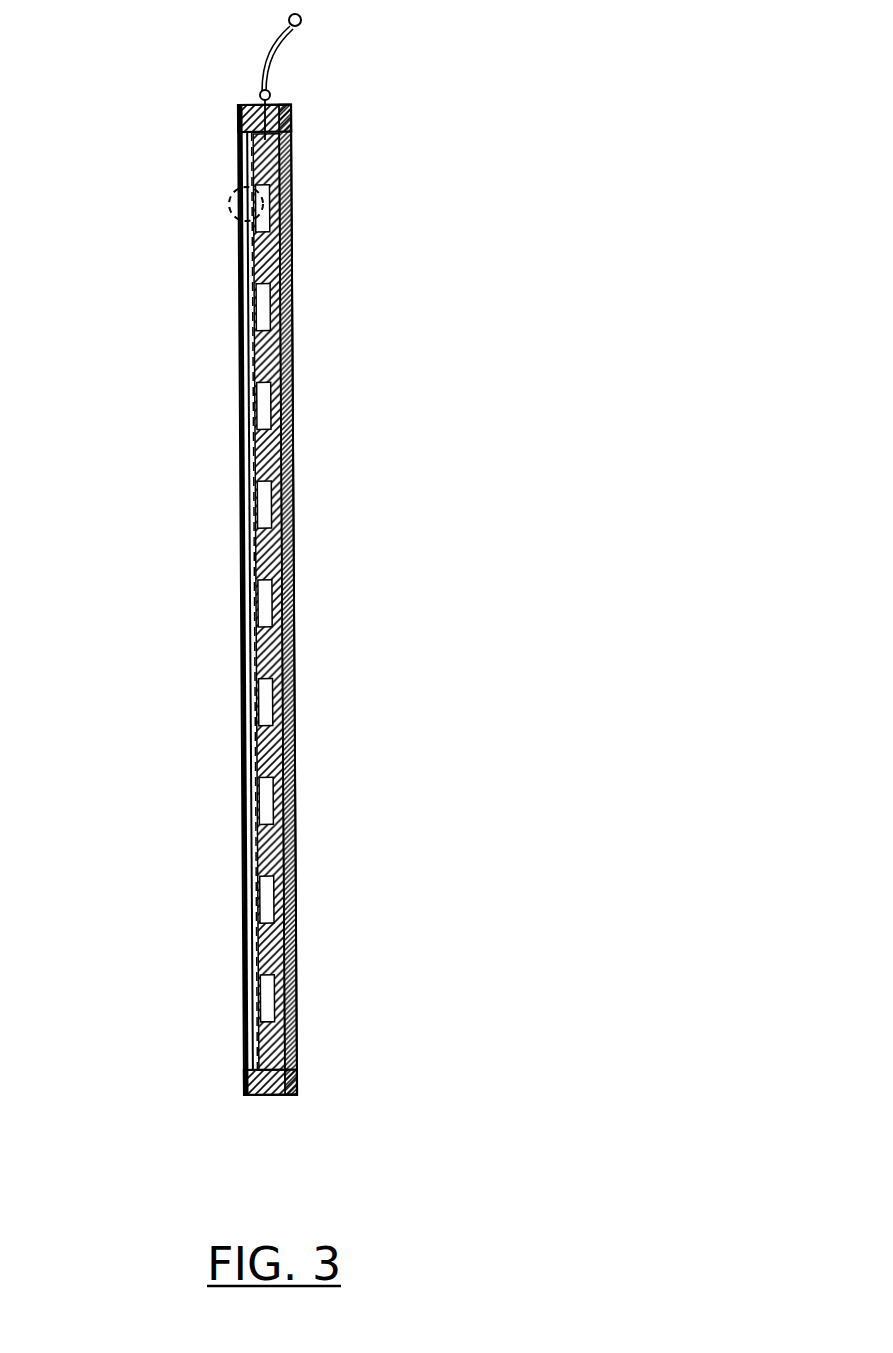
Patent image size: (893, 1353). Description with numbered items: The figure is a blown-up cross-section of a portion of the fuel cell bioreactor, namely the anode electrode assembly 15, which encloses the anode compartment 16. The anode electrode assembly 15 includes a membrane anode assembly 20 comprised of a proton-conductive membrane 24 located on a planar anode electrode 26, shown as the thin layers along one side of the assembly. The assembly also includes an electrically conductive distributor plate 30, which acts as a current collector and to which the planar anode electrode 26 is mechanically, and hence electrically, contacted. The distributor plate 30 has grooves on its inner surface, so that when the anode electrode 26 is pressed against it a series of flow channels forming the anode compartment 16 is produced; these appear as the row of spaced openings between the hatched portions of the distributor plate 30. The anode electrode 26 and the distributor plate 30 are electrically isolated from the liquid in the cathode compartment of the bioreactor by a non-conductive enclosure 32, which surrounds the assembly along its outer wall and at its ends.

The anode electrode assembly 15 is at (342, 96).
The anode compartment 16 is at (266, 802).
The membrane anode assembly 20 is at (236, 220).
The membrane 24 is at (241, 505).
The planar anode electrode 26 is at (250, 700).
The distributor plate 30 is at (257, 153).
The non-conductive enclosure 32 is at (291, 112).